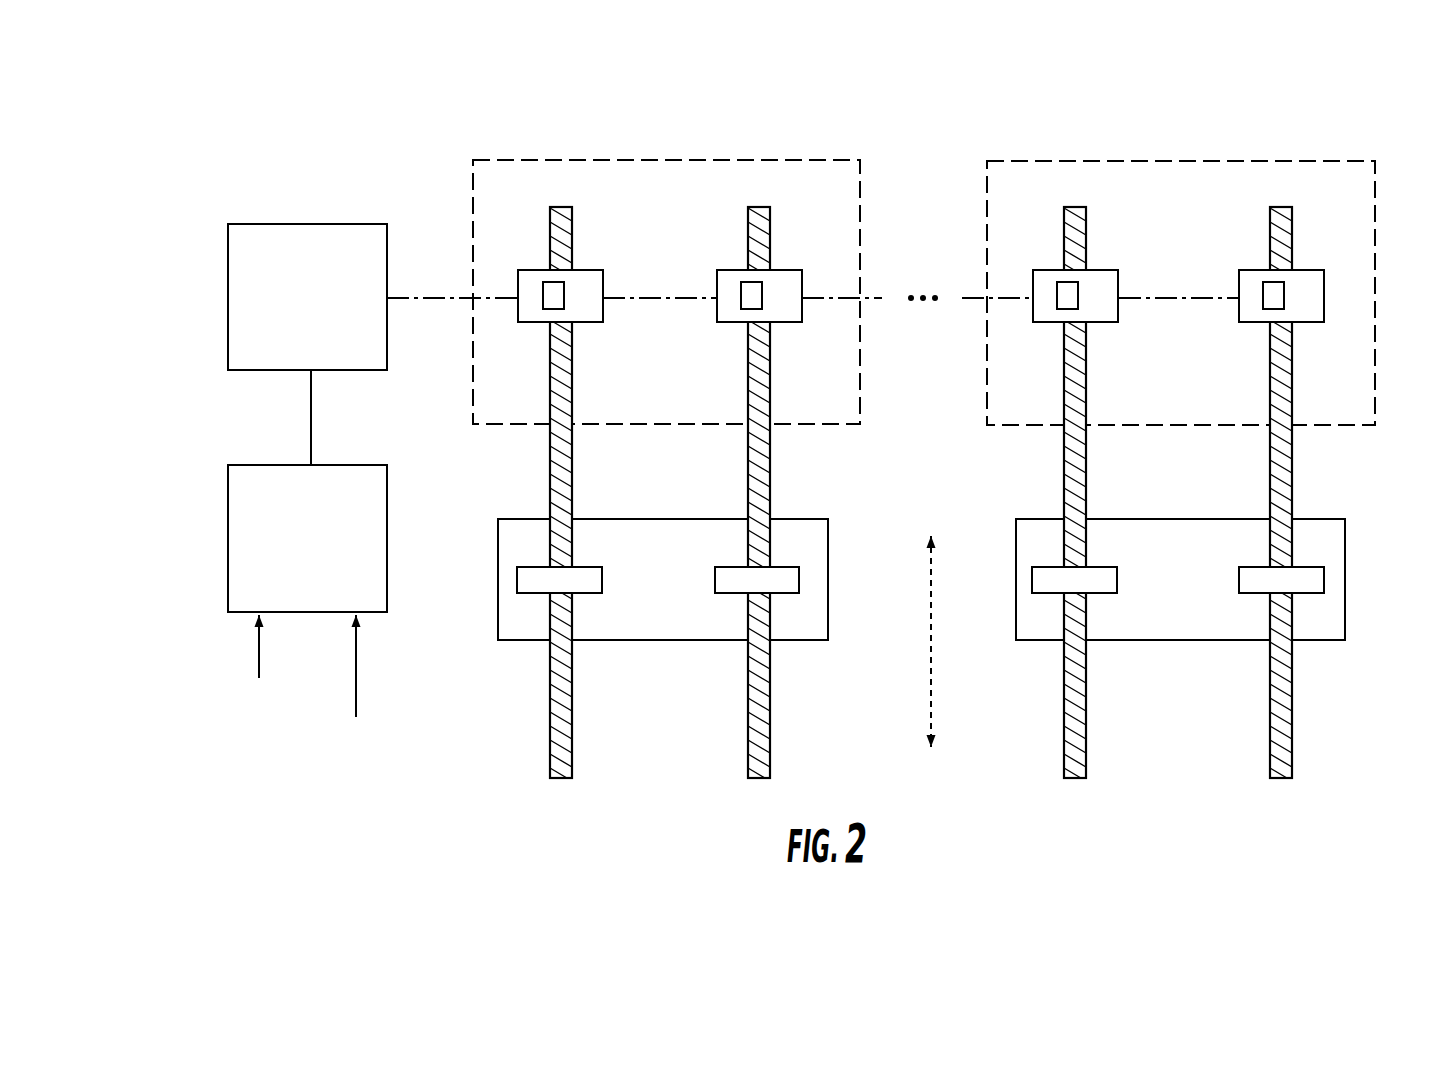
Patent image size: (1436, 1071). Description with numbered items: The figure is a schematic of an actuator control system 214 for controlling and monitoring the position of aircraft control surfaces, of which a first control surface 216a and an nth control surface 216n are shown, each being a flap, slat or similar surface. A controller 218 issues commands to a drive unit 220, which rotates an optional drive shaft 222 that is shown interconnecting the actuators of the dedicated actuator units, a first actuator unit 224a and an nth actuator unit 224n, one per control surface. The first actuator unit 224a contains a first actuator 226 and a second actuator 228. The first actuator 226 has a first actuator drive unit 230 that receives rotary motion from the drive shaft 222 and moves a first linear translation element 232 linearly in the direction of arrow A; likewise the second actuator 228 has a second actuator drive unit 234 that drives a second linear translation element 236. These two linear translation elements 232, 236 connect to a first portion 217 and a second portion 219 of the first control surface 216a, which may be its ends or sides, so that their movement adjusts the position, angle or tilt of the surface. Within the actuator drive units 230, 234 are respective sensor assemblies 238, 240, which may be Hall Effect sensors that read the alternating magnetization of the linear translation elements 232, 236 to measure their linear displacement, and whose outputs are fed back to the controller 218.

The system 214 is at (409, 132).
The first control surface 216a is at (652, 642).
The control surface 216n is at (1173, 642).
The first portion 217 is at (517, 599).
The controller 218 is at (327, 567).
The second portion 219 is at (793, 598).
The drive unit 220 is at (288, 321).
The drive shaft 222 is at (429, 297).
The first actuator unit 224a is at (653, 160).
The actuator unit 224n is at (1210, 160).
The first actuator 226 is at (625, 267).
The second actuator 228 is at (804, 266).
The first actuator drive unit 230 is at (603, 313).
The first linear translation element 232 is at (569, 397).
The second actuator drive unit 234 is at (804, 312).
The second linear translation element 236 is at (763, 398).
The first sensor assembly 238 is at (553, 297).
The second sensor assembly 240 is at (750, 300).